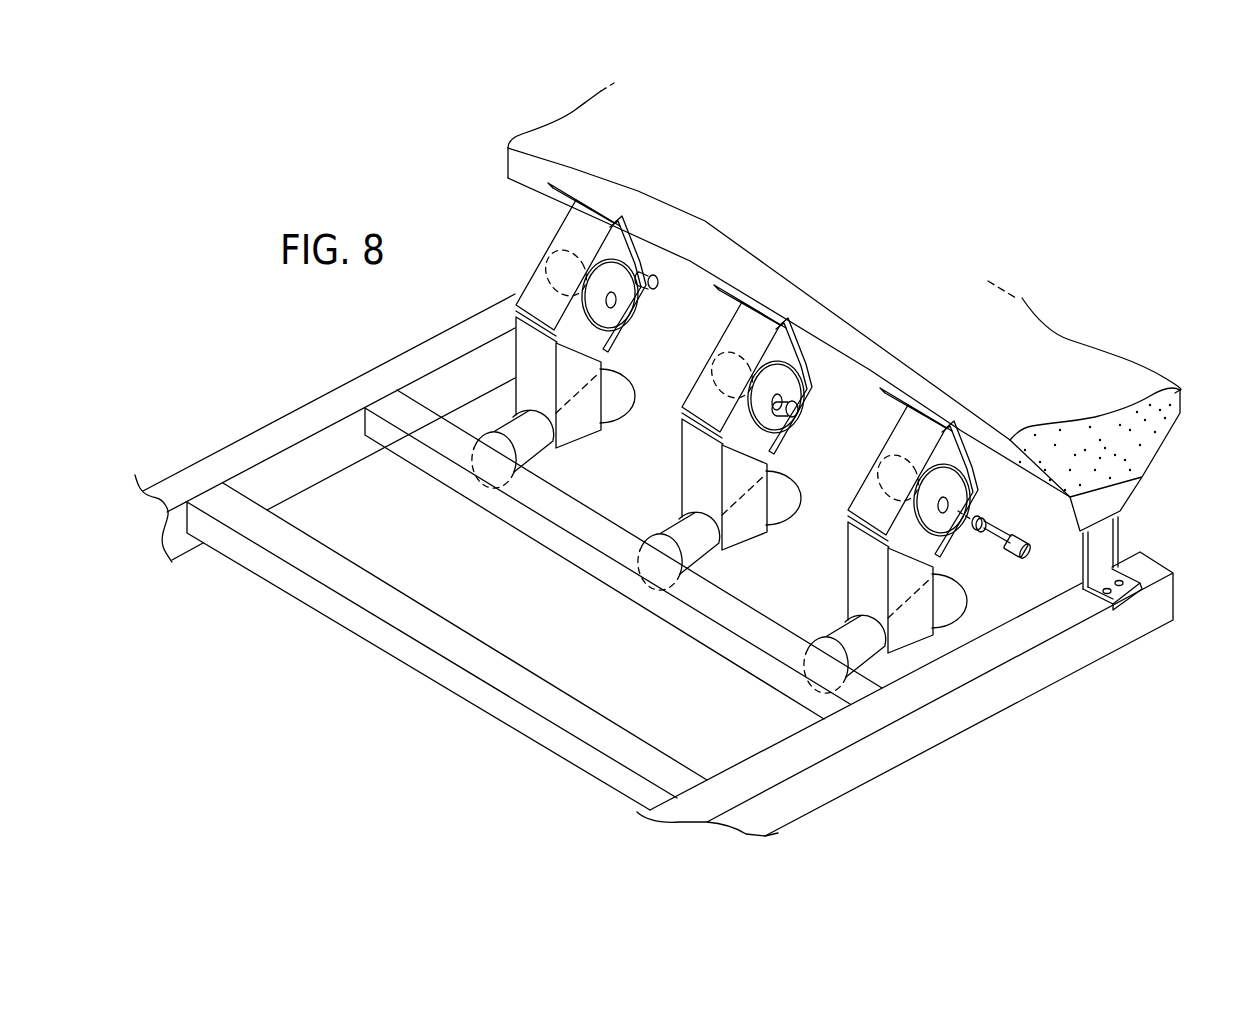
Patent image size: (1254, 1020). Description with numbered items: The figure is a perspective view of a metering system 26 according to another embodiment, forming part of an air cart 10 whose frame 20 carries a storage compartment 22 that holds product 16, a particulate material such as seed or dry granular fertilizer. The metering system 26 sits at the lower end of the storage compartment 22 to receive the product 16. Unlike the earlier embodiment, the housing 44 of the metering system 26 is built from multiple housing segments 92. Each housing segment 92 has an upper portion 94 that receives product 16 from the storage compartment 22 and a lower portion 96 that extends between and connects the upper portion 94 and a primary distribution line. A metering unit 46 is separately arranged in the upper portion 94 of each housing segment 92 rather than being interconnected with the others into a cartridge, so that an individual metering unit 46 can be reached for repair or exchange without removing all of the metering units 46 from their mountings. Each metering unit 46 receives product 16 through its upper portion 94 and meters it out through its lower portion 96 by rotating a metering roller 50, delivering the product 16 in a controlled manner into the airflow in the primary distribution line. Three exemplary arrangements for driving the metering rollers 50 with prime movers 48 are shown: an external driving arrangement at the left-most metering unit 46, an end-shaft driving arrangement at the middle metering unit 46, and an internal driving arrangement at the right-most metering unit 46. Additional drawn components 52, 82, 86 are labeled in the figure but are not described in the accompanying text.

The air cart 10 is at (248, 357).
The product 16 is at (1183, 413).
The frame 20 is at (1047, 668).
The storage compartment 22 is at (1050, 348).
The metering system 26 is at (481, 147).
The housing 44 is at (472, 203).
The metering unit 46 is at (739, 360).
The prime mover 48 is at (649, 270).
The metering roller 50 is at (536, 268).
The retainer strip 52 is at (640, 319).
The bolt head 82 is at (986, 519).
The bolt shank 86 is at (993, 534).
The housing segment 92 is at (739, 438).
The upper portion 94 is at (574, 206).
The lower portion 96 is at (524, 357).